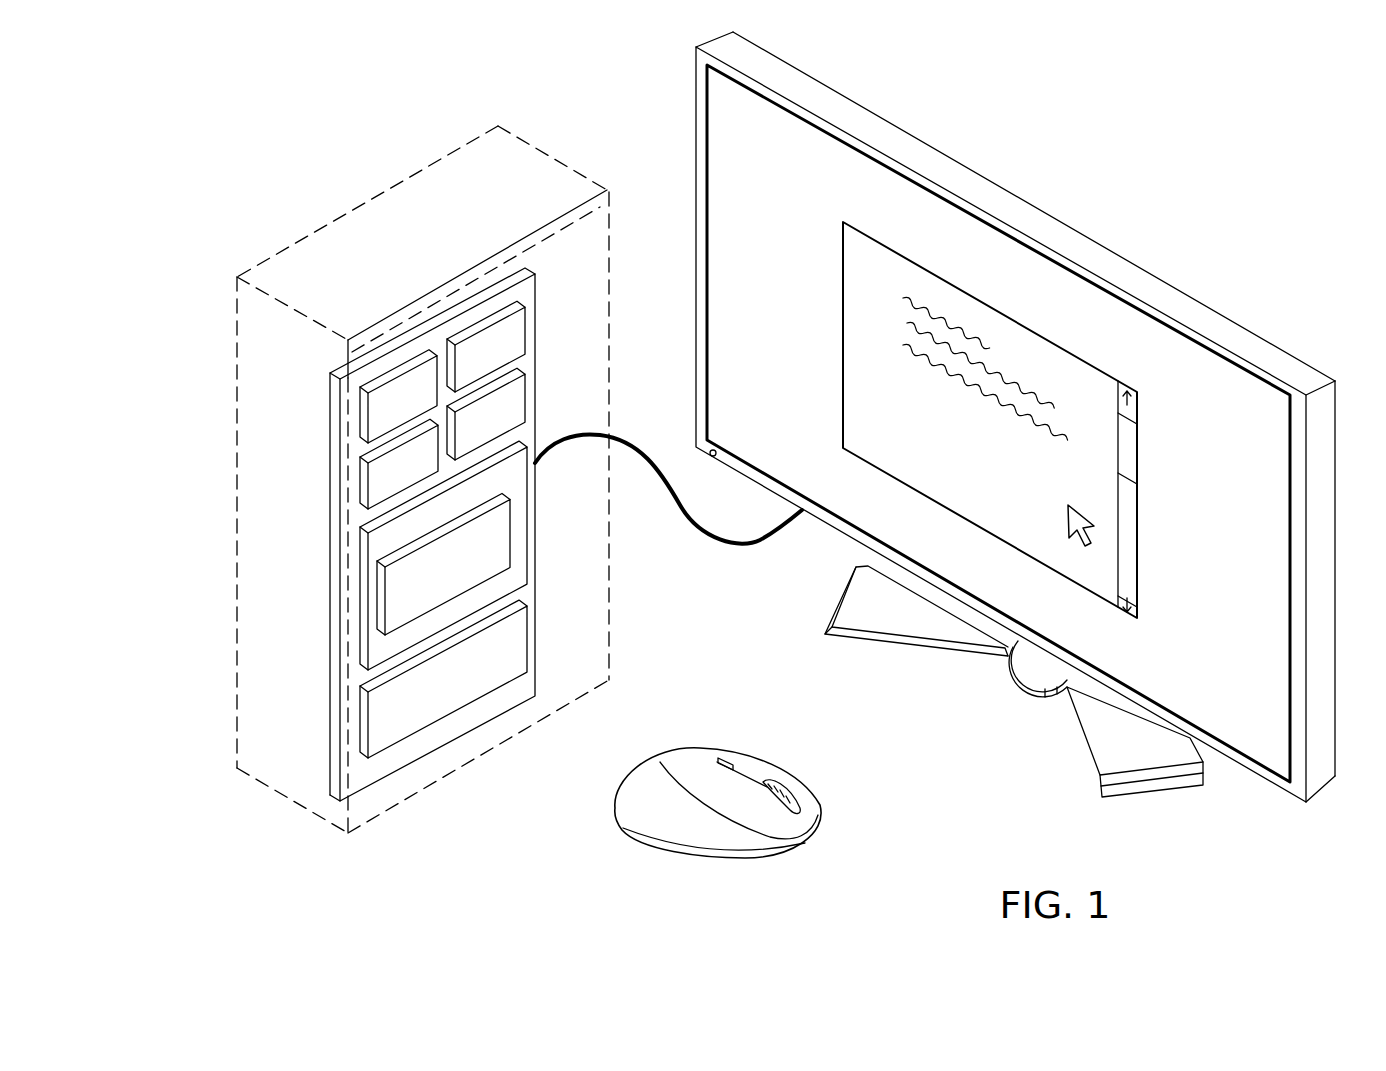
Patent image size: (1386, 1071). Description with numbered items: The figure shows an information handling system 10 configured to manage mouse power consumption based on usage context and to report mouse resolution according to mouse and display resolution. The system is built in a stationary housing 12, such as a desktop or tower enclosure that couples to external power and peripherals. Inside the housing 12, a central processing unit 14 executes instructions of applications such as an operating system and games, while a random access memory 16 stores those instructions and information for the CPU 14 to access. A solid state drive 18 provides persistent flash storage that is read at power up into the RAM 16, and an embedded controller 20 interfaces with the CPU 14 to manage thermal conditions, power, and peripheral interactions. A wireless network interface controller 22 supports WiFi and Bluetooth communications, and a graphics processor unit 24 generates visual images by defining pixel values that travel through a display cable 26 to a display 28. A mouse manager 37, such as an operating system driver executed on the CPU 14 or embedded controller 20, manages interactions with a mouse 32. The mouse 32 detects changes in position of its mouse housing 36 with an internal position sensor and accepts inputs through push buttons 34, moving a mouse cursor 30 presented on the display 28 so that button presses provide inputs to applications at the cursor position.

The information handling system 10 is at (257, 160).
The housing 12 is at (230, 389).
The central processing unit 14 is at (360, 419).
The random access memory 16 is at (368, 488).
The solid state drive 18 is at (378, 600).
The embedded controller 20 is at (377, 727).
The wireless network interface controller 22 is at (520, 333).
The graphics processor unit 24 is at (520, 403).
The display cable 26 is at (727, 545).
The display 28 is at (1130, 268).
The mouse cursor 30 is at (1085, 527).
The mouse 32 is at (717, 866).
The push buttons 34 is at (815, 809).
The mouse housing 36 is at (580, 823).
The mouse manager 37 is at (503, 537).